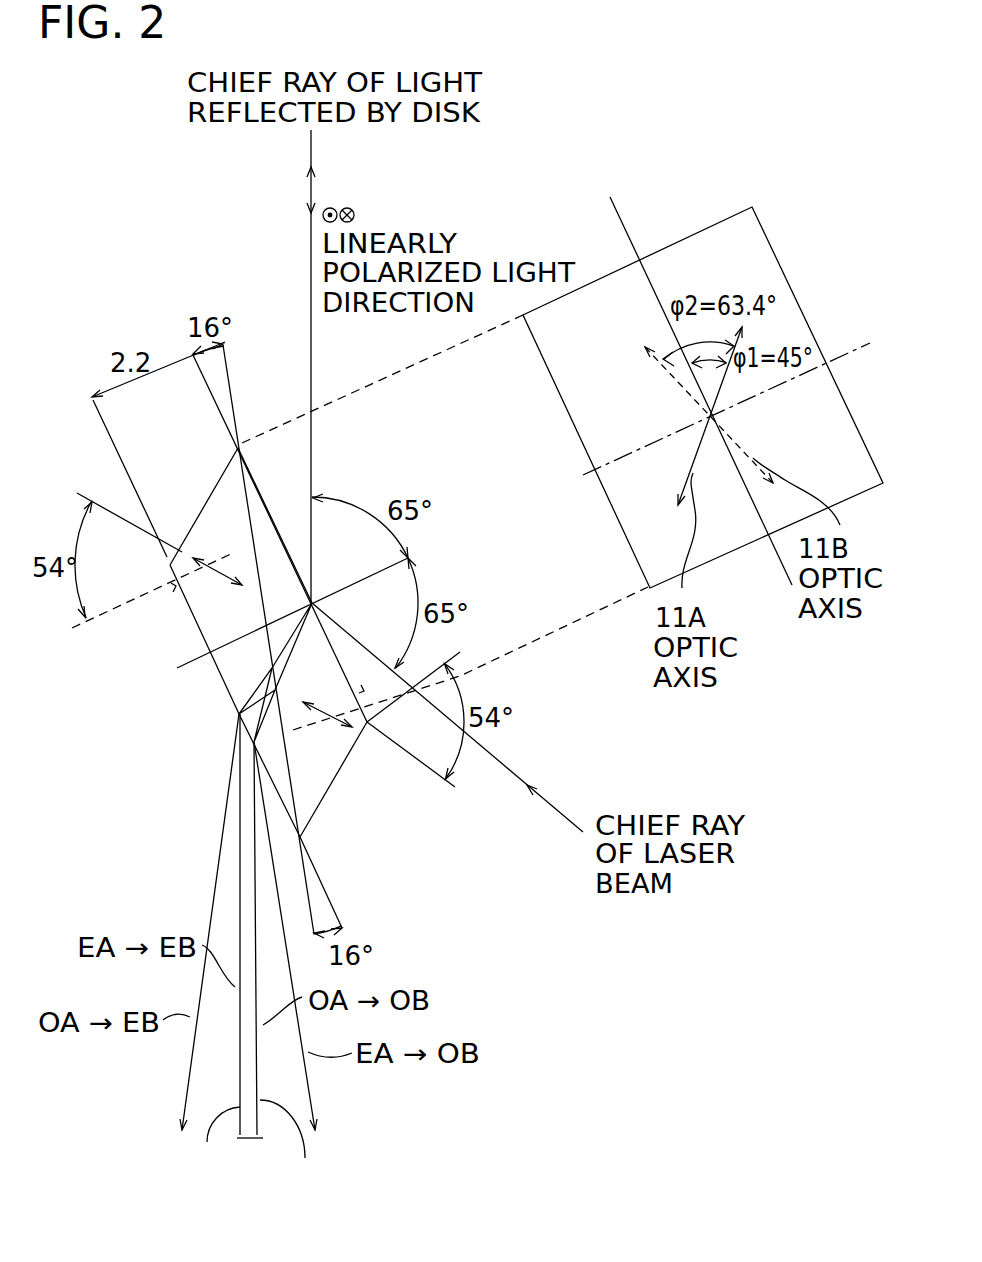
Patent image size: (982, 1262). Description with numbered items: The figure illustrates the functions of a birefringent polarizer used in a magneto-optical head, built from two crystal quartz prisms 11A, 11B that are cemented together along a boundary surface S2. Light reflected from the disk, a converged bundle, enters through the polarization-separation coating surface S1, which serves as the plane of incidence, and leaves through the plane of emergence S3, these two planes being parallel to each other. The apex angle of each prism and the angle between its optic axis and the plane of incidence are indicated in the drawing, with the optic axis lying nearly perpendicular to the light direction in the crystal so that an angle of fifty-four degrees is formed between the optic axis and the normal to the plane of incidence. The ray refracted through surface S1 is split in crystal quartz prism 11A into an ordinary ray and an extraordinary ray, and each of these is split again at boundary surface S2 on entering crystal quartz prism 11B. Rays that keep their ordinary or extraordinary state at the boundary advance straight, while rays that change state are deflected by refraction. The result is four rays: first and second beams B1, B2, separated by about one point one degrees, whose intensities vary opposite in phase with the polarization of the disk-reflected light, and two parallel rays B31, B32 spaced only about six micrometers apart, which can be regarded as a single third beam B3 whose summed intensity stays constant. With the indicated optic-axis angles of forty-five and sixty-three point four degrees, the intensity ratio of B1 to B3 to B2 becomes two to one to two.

The crystal quartz prism 11A is at (332, 768).
The crystal quartz prism 11B is at (202, 517).
The polarization-separation coating surface S1 is at (250, 465).
The boundary surface S2 is at (248, 502).
The plane of emergence S3 is at (187, 618).
The first beam B1 is at (313, 1100).
The second beam B2 is at (185, 1090).
The third beam B3 is at (256, 945).
The ray B31 is at (303, 1148).
The ray B32 is at (205, 1143).